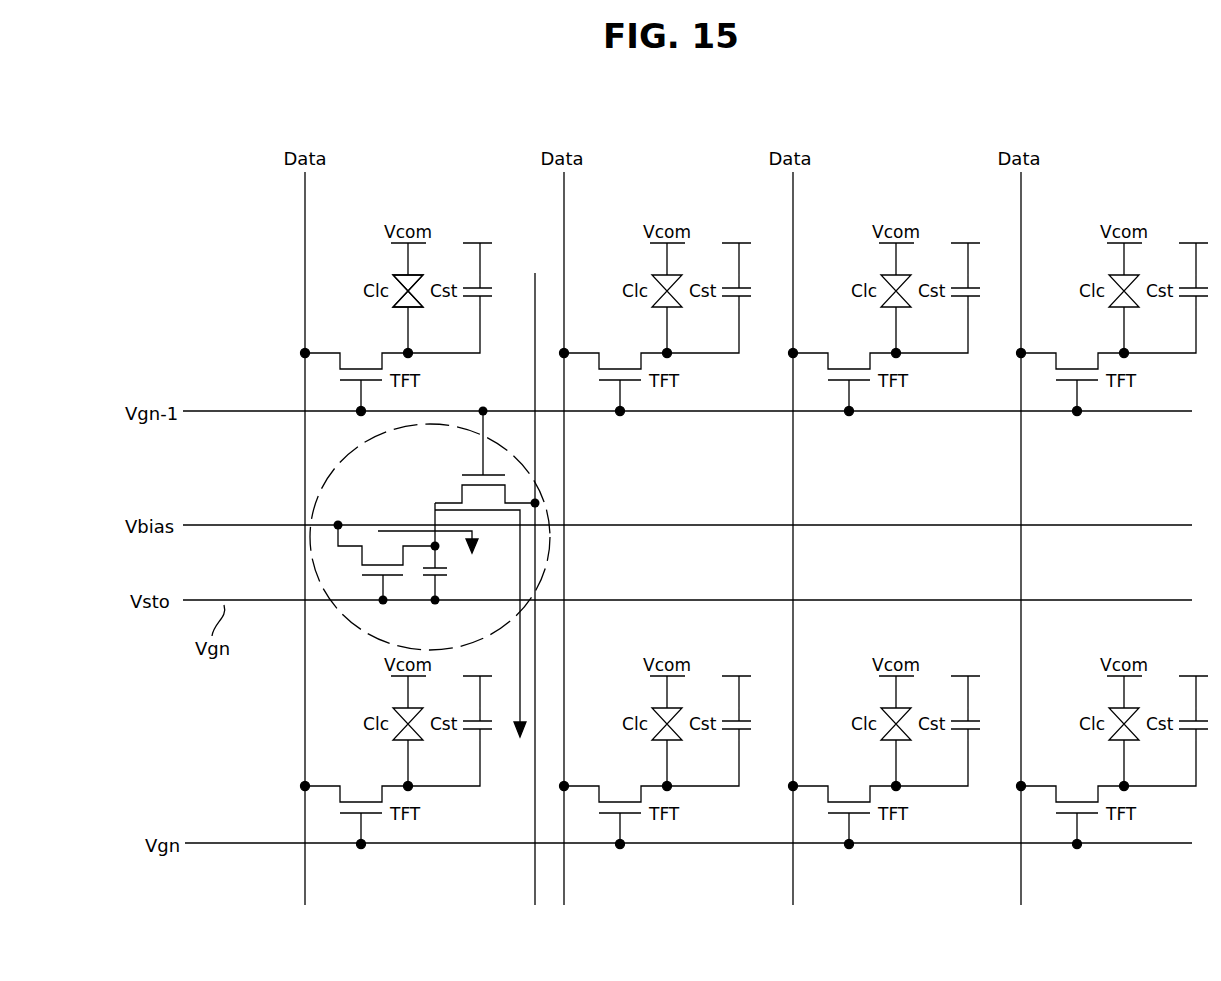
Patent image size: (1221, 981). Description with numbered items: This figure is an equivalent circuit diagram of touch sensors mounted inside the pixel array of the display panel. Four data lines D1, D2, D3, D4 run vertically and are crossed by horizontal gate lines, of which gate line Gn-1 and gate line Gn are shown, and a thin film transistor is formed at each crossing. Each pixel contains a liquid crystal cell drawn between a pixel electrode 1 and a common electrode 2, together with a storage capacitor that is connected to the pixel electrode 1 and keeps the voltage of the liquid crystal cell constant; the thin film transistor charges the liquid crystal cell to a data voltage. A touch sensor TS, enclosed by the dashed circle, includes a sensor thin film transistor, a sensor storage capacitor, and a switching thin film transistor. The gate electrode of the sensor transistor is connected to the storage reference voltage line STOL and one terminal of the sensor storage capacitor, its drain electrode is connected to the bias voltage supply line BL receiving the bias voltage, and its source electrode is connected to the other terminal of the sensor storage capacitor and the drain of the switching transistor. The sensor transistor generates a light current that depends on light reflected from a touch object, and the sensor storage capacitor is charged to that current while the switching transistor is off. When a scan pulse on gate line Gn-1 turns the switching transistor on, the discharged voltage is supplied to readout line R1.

The pixel electrode 1 is at (397, 304).
The common electrode 2 is at (400, 275).
The data line D1 is at (305, 199).
The data line D2 is at (564, 198).
The data line D3 is at (793, 198).
The data line D4 is at (1021, 198).
The readout line R1 is at (535, 868).
The touch sensor TS is at (548, 558).
The gate line Gn-1 is at (257, 410).
The gate line Gn is at (258, 842).
The bias voltage supply line BL is at (257, 524).
The storage reference voltage line STOL is at (258, 599).